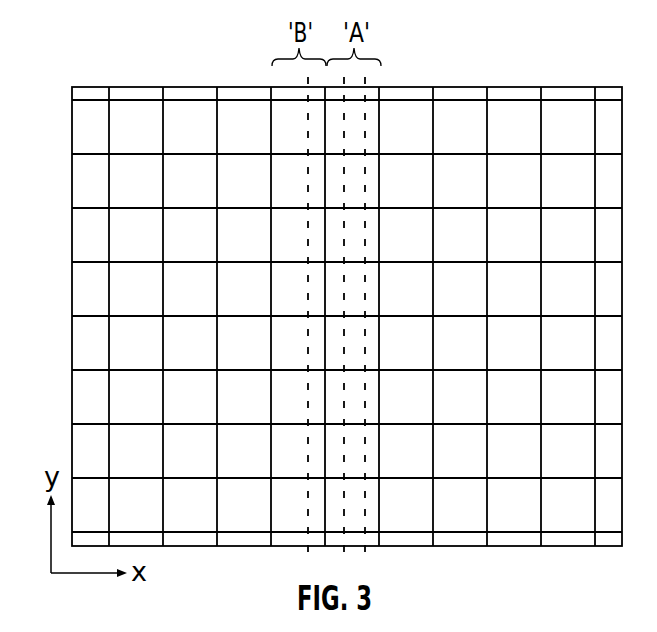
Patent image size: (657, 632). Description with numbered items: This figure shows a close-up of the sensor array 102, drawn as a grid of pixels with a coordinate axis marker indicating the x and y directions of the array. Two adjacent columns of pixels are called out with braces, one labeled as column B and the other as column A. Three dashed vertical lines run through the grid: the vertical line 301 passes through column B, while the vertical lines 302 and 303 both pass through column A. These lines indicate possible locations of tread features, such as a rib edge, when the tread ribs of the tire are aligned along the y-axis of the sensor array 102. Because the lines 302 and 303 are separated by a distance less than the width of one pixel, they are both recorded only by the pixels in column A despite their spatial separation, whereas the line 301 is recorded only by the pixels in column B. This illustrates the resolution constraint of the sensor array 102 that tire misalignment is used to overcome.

The sensor array 102 is at (116, 80).
The vertical line 301 is at (306, 118).
The vertical line 302 is at (346, 118).
The vertical line 303 is at (366, 172).